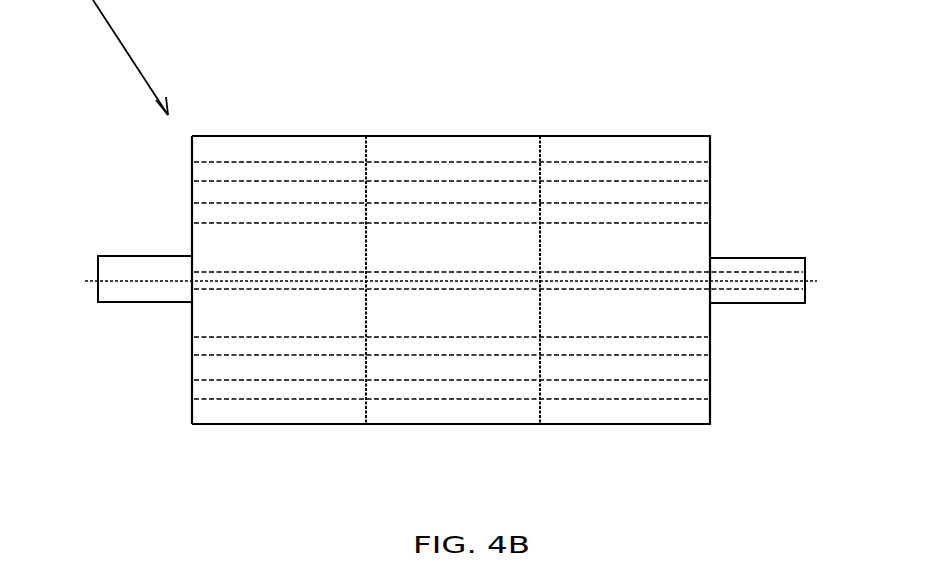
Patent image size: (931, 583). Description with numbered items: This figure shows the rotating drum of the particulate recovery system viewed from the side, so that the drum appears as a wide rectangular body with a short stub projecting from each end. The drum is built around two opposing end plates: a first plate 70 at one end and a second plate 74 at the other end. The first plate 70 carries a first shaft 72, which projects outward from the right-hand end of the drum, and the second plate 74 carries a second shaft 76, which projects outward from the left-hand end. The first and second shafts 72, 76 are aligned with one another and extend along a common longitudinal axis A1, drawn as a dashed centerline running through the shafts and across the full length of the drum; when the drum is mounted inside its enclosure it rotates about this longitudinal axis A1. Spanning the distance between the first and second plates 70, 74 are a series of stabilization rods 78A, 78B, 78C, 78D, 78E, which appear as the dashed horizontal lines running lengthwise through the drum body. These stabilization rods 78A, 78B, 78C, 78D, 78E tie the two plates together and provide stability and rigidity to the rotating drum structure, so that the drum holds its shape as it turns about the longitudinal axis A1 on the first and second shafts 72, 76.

The first plate 70 is at (712, 190).
The first shaft 72 is at (764, 302).
The second plate 74 is at (190, 197).
The second shaft 76 is at (142, 303).
The stabilization rod 78A is at (272, 168).
The stabilization rod 78B is at (478, 215).
The stabilization rod 78C is at (310, 272).
The stabilization rod 78D is at (467, 390).
The stabilization rod 78E is at (315, 347).
The longitudinal axis A1 is at (407, 281).